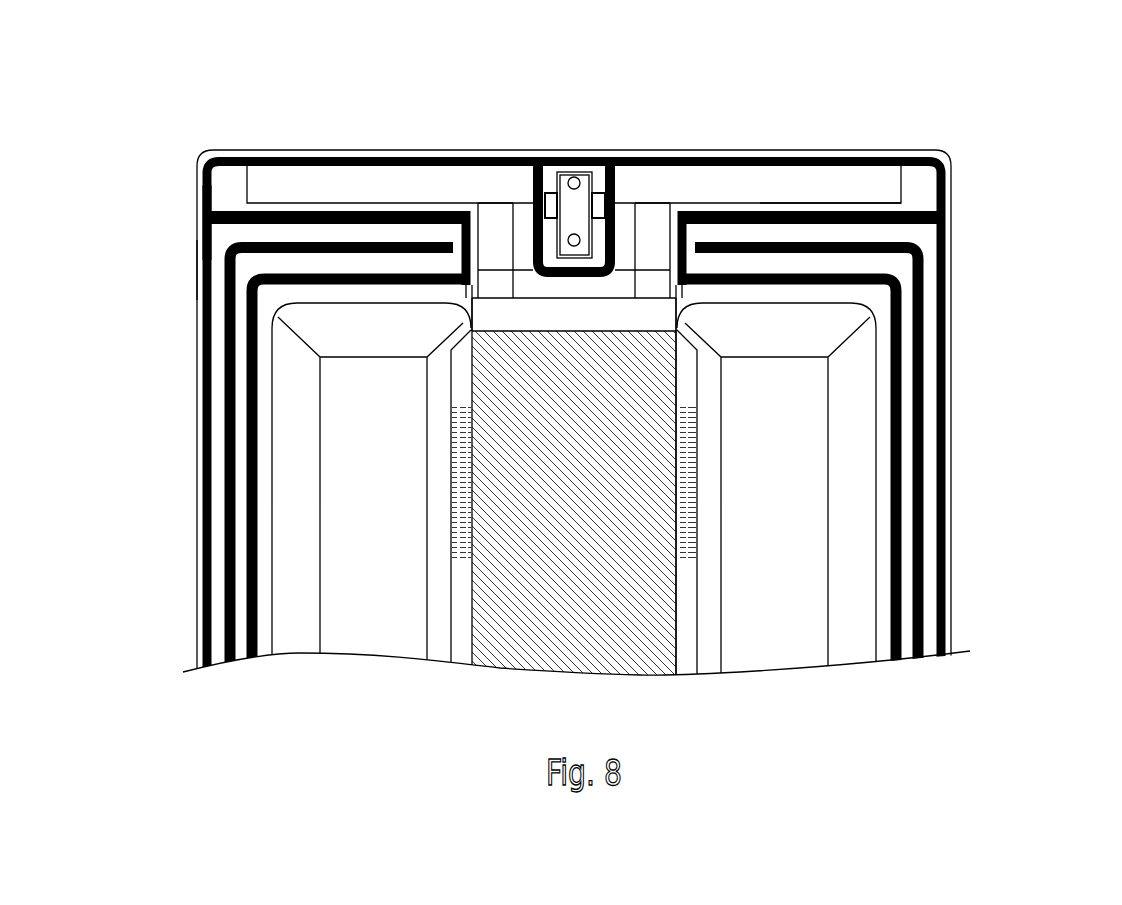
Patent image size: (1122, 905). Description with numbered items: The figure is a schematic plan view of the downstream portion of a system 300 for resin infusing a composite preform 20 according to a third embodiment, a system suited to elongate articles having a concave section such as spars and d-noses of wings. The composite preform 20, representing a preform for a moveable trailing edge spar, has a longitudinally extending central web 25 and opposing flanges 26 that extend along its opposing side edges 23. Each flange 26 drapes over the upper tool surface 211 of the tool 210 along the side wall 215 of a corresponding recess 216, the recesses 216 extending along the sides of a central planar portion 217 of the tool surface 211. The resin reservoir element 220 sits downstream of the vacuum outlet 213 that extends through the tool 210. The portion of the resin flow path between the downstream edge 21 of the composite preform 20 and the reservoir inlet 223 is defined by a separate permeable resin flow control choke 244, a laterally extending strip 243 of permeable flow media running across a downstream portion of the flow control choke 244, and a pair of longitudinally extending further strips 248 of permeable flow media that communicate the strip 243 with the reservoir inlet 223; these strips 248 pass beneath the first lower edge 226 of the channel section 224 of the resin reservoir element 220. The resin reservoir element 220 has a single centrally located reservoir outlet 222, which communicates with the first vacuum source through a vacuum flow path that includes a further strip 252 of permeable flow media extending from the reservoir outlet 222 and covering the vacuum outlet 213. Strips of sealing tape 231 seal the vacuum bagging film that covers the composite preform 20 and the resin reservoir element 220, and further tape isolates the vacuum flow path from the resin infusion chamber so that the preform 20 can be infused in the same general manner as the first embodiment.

The composite preform 20 is at (688, 416).
The downstream edge 21 is at (653, 243).
The side edges 23 is at (446, 483).
The central web 25 is at (587, 618).
The flanges 26 is at (460, 618).
The tool 210 is at (963, 490).
The upper tool surface 211 is at (947, 156).
The vacuum outlet 213 is at (575, 232).
The side wall 215 is at (457, 338).
The recess 216 is at (370, 567).
The central planar portion 217 is at (660, 318).
The resin reservoir element 220 is at (311, 186).
The reservoir outlet 222 is at (575, 177).
The reservoir inlet 223 is at (497, 206).
The channel section 224 is at (840, 158).
The first lower edge 226 is at (853, 200).
The sealing tape 231 is at (203, 195).
The strip of permeable flow media 243 is at (548, 300).
The resin flow control choke 244 is at (493, 318).
The further strips of permeable flow media 248 is at (495, 233).
The further strip of permeable flow media 252 is at (531, 162).
The system 300 is at (183, 275).